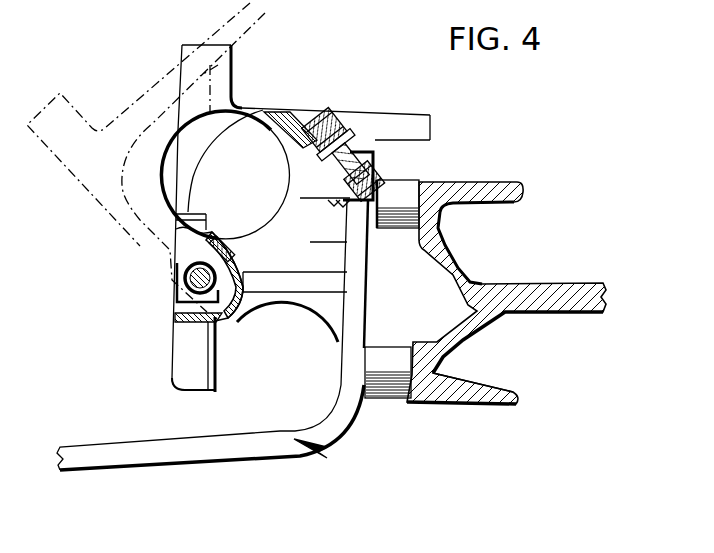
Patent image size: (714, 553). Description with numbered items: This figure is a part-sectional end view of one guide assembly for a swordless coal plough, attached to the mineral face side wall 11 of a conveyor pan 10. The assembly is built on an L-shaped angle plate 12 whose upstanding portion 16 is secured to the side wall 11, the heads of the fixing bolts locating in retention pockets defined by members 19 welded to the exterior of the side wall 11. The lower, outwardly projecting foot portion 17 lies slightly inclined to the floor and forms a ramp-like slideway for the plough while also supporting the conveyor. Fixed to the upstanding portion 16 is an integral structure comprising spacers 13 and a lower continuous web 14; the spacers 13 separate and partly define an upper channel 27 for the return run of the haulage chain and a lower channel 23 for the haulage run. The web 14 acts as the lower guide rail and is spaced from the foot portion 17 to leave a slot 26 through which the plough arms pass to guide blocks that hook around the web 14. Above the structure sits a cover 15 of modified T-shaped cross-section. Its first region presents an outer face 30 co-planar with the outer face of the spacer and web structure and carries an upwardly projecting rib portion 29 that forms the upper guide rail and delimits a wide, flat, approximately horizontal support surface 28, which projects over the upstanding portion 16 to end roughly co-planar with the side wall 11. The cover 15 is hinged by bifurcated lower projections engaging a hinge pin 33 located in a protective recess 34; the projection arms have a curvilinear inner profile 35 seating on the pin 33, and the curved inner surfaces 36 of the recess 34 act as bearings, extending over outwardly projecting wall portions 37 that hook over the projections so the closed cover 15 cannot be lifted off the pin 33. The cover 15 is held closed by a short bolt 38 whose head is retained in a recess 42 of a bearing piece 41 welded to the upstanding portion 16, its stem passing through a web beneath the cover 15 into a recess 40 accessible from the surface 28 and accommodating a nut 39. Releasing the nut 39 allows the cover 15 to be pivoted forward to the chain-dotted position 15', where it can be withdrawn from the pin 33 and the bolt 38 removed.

The pivoted cover position 15' is at (146, 157).
The rib portion 29 is at (235, 78).
The upper support surface 28 is at (257, 108).
The recess 40 is at (308, 110).
The nut 39 is at (333, 112).
The short bolt 38 is at (352, 114).
The recess 42 is at (398, 151).
The bearing piece 41 is at (374, 162).
The cover 15 is at (216, 175).
The upper channel 27 is at (294, 198).
The outer face 30 is at (180, 192).
The wall portion 37 is at (218, 244).
The curvilinear inner profile 35 is at (220, 252).
The inner surface 36 is at (262, 262).
The hinge pin 33 is at (175, 288).
The protective recess 34 is at (173, 306).
The web 14 is at (183, 364).
The slot 26 is at (210, 412).
The spacer 13 is at (330, 306).
The lower channel 23 is at (285, 396).
The upstanding portion 16 is at (357, 302).
The foot portion 17 is at (213, 451).
The angle plate 12 is at (325, 452).
The retention pocket member 19 is at (403, 218).
The conveyor pan 10 is at (554, 286).
The side wall 11 is at (470, 400).